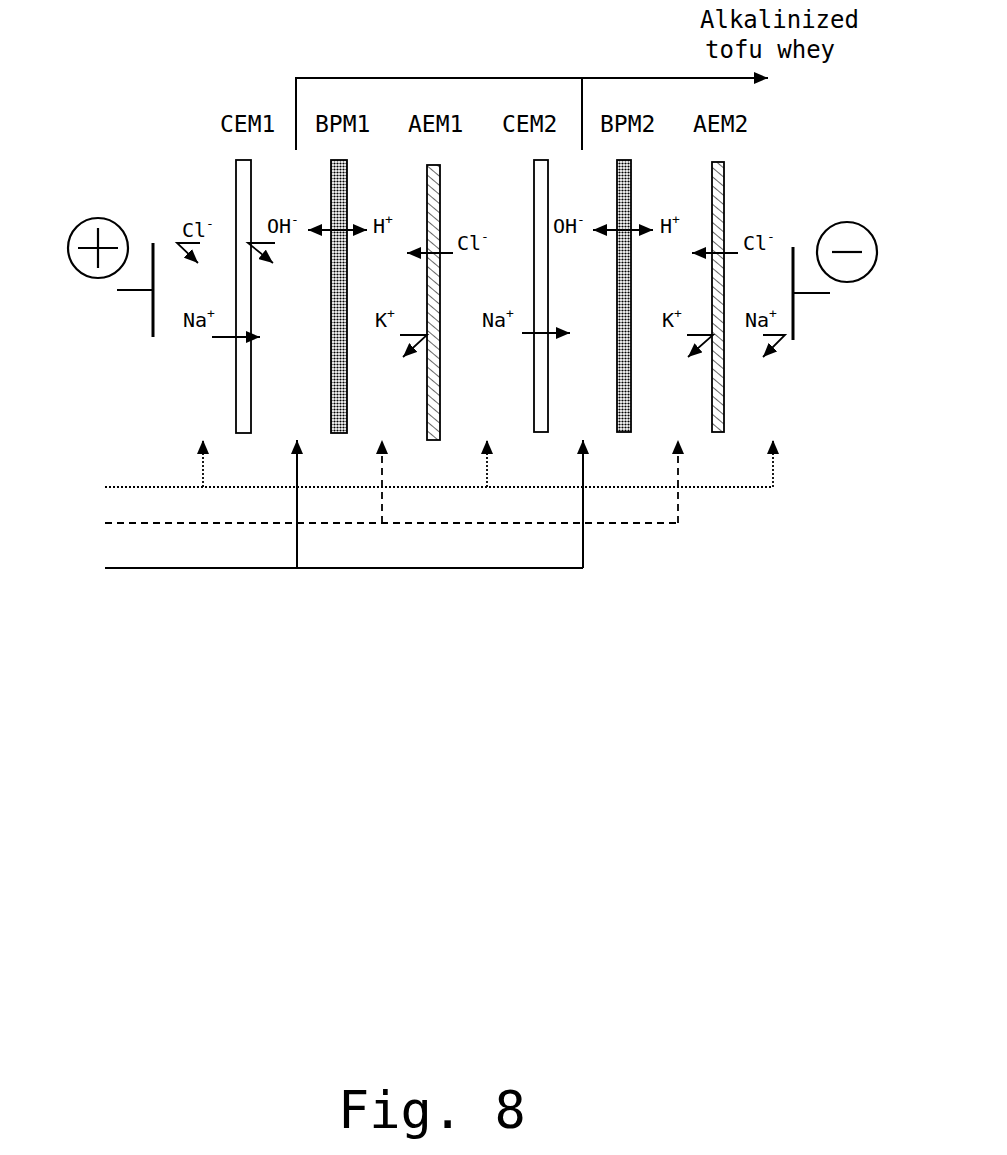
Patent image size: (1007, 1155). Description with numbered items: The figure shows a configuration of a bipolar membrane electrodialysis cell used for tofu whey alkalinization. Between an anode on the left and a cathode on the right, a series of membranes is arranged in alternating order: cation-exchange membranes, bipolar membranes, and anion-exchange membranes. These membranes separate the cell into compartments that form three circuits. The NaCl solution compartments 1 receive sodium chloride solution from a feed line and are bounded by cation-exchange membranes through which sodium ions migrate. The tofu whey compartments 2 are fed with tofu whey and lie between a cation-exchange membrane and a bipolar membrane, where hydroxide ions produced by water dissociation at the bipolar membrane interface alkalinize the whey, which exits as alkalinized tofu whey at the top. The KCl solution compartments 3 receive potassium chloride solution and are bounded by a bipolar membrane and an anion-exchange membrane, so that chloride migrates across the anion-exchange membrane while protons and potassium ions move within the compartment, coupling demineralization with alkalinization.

The NaCl solution compartment 1 is at (399, 439).
The tofu whey compartment 2 is at (310, 484).
The KCl solution compartment 3 is at (358, 461).